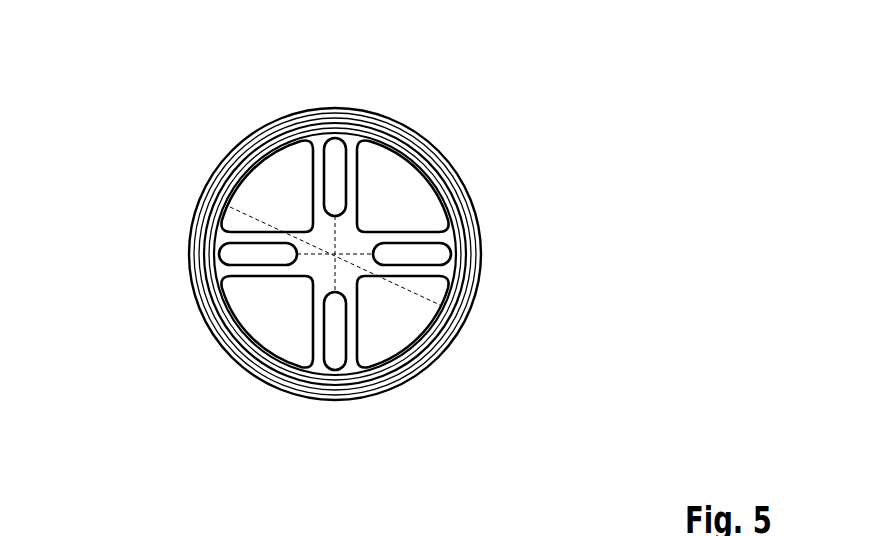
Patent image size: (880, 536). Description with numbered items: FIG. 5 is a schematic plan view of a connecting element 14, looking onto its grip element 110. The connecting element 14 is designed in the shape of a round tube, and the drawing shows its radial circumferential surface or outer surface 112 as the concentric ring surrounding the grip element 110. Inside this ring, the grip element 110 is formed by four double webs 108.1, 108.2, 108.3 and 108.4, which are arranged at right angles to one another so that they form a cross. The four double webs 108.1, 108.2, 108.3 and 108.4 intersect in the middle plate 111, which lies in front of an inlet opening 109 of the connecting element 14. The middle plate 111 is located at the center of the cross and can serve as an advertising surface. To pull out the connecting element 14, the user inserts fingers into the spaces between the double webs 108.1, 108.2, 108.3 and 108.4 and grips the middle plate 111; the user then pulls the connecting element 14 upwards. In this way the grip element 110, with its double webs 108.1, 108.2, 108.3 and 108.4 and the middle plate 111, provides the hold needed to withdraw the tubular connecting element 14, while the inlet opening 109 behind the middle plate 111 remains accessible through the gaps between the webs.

The connecting element 14 is at (336, 223).
The double web 108.1 is at (363, 152).
The double web 108.2 is at (481, 219).
The double web 108.3 is at (356, 342).
The double web 108.4 is at (218, 306).
The inlet opening 109 is at (299, 182).
The grip element 110 is at (283, 213).
The middle plate 111 is at (322, 270).
The outer surface 112 is at (242, 136).